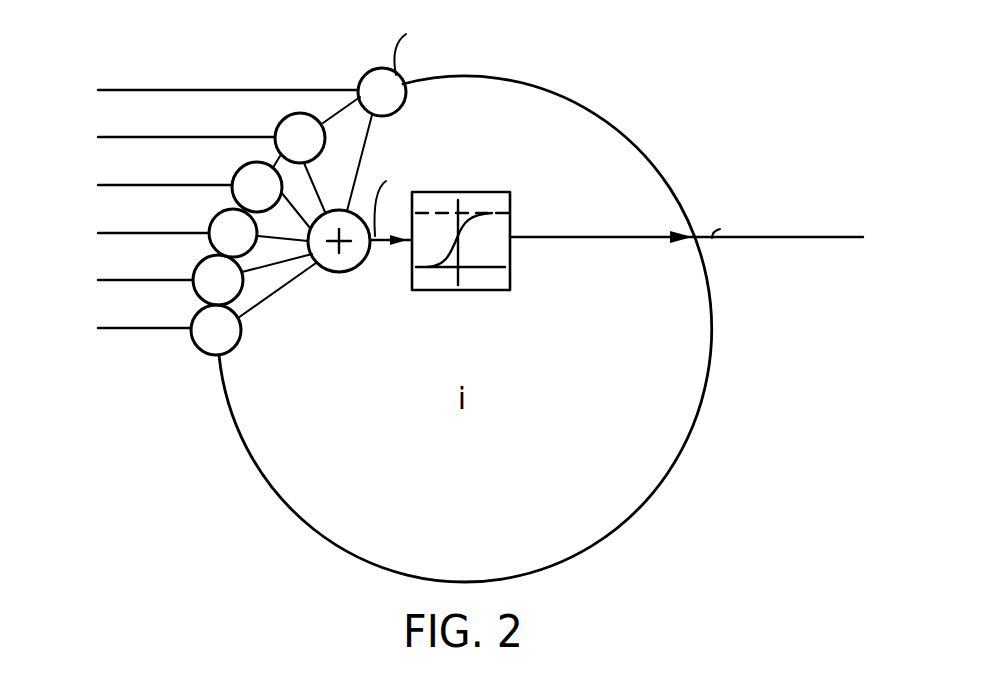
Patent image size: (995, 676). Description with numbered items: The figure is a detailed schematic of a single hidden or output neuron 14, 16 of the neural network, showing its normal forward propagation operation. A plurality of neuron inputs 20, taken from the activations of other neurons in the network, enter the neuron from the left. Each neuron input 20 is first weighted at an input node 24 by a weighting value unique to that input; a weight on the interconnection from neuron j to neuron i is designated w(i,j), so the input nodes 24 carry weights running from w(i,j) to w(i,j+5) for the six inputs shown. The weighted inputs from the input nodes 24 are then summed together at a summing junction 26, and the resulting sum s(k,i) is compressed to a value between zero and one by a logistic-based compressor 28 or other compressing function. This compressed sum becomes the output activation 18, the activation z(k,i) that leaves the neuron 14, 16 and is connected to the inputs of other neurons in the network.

The output neuron 14 is at (489, 327).
The hidden neuron 16 is at (655, 103).
The output activation 18 is at (700, 248).
The neuron inputs 20 is at (165, 62).
The input node 24 is at (357, 72).
The summing junction 26 is at (349, 273).
The logistic-based compressor 28 is at (438, 292).